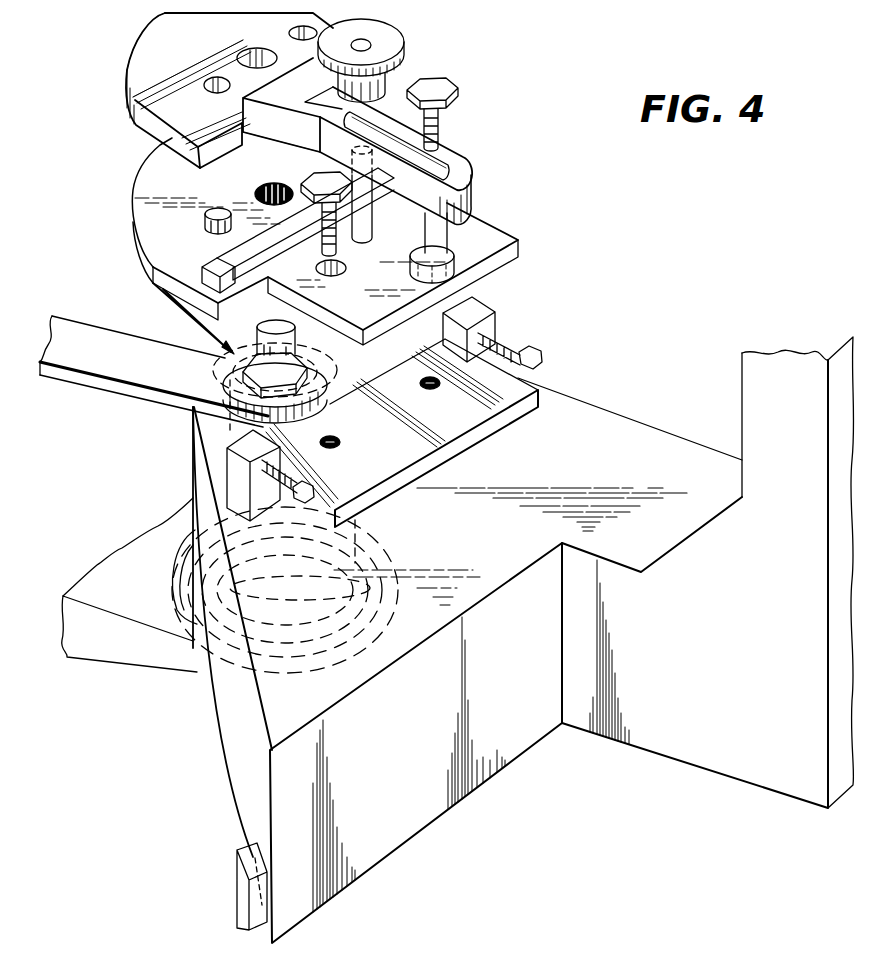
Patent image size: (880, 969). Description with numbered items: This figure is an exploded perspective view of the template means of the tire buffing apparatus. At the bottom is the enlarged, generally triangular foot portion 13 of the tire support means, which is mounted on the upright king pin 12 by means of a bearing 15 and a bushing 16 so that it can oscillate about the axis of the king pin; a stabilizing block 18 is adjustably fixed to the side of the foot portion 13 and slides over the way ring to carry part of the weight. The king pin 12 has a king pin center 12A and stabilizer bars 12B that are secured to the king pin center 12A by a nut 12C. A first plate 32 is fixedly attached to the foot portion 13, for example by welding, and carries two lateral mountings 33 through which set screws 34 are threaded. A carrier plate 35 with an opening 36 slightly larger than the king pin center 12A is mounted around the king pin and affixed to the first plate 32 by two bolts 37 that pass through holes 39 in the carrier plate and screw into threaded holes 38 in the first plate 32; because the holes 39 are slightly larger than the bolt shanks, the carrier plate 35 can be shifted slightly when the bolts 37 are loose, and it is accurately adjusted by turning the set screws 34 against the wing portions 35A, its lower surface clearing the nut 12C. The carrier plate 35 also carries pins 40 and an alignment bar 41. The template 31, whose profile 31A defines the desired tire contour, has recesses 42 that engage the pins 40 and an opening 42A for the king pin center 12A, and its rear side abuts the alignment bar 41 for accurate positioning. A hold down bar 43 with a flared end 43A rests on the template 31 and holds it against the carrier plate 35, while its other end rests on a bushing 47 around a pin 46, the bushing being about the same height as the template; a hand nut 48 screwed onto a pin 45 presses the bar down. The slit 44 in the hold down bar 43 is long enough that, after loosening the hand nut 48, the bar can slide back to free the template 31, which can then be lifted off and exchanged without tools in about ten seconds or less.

The king pin 12 is at (347, 467).
The king pin center 12A is at (320, 312).
The stabilizer bars 12B is at (108, 368).
The nut 12C is at (323, 364).
The foot portion 13 is at (592, 477).
The bearing 15 is at (212, 368).
The bushing 16 is at (176, 547).
The stabilizing block 18 is at (237, 890).
The template 31 is at (150, 66).
The profile 31A is at (150, 31).
The first plate 32 is at (527, 385).
The mountings 33 is at (227, 450).
The set screws 34 is at (230, 473).
The carrier plate 35 is at (508, 240).
The wing portion 35A is at (152, 268).
The opening 36 is at (255, 193).
The bolts 37 is at (458, 89).
The threaded holes 38 is at (336, 437).
The holes 39 is at (348, 269).
The pins 40 is at (208, 229).
The alignment bar 41 is at (184, 303).
The recesses 42 is at (218, 93).
The opening 42A is at (250, 48).
The hold down bar 43 is at (380, 110).
The flared end 43A is at (265, 100).
The slit 44 is at (445, 175).
The pin 45 is at (368, 212).
The pin 46 is at (440, 228).
The bushing 47 is at (453, 262).
The hand nut 48 is at (390, 48).